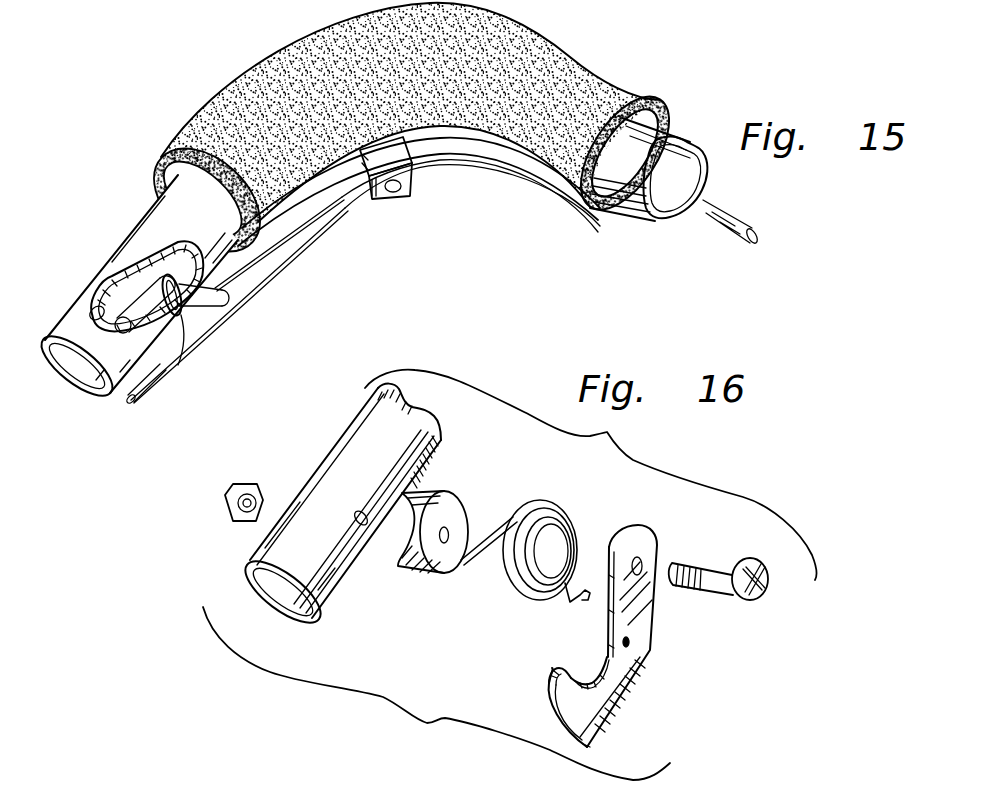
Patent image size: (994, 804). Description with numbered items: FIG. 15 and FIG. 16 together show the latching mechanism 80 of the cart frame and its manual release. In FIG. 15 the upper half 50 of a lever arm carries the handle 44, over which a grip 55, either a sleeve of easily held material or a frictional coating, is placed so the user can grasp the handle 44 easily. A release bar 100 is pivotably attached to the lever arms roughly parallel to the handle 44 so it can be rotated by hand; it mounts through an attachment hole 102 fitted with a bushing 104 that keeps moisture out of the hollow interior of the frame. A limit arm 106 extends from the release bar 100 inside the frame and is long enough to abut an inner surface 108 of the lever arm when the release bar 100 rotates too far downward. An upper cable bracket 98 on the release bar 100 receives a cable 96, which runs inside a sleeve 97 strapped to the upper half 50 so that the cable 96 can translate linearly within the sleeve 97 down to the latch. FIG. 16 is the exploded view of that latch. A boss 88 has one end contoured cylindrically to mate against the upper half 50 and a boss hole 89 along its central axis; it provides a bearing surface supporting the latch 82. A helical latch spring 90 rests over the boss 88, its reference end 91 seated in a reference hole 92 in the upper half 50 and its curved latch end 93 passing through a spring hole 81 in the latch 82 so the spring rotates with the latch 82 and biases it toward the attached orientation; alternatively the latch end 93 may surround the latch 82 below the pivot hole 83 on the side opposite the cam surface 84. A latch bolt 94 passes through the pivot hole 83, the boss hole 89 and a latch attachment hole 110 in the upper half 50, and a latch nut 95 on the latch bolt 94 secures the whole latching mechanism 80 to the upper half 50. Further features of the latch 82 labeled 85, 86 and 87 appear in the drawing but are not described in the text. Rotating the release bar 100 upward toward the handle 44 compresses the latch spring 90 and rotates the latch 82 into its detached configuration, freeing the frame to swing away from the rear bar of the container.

In FIG. 15, the handle 44 is at (660, 143).
In FIG. 15, the upper half 50 is at (156, 214).
In FIG. 16, the upper half 50 is at (358, 418).
In FIG. 15, the grip 55 is at (527, 88).
In FIG. 16, the latching mechanism 80 is at (262, 688).
In FIG. 16, the spring hole 81 is at (623, 642).
In FIG. 16, the latch 82 is at (640, 623).
In FIG. 16, the pivot hole 83 is at (640, 558).
In FIG. 16, the cam surface 84 is at (557, 715).
In FIG. 16, the hook tip 85 is at (583, 745).
In FIG. 16, the hook end 86 is at (548, 670).
In FIG. 16, the hook recess 87 is at (572, 660).
In FIG. 16, the boss 88 is at (440, 492).
In FIG. 16, the boss hole 89 is at (463, 512).
In FIG. 16, the helical latch spring 90 is at (551, 507).
In FIG. 16, the reference end 91 is at (465, 568).
In FIG. 16, the reference hole 92 is at (341, 558).
In FIG. 16, the latch end 93 is at (587, 582).
In FIG. 16, the latch bolt 94 is at (713, 583).
In FIG. 16, the latch nut 95 is at (242, 483).
In FIG. 15, the cable 96 is at (313, 238).
In FIG. 15, the sleeve 97 is at (142, 392).
In FIG. 15, the upper cable bracket 98 is at (395, 200).
In FIG. 15, the release bar 100 is at (438, 140).
In FIG. 15, the attachment hole 102 is at (222, 296).
In FIG. 15, the bushing 104 is at (184, 318).
In FIG. 15, the limit arm 106 is at (147, 290).
In FIG. 15, the inner surface 108 is at (103, 312).
In FIG. 16, the latch attachment hole 110 is at (357, 511).